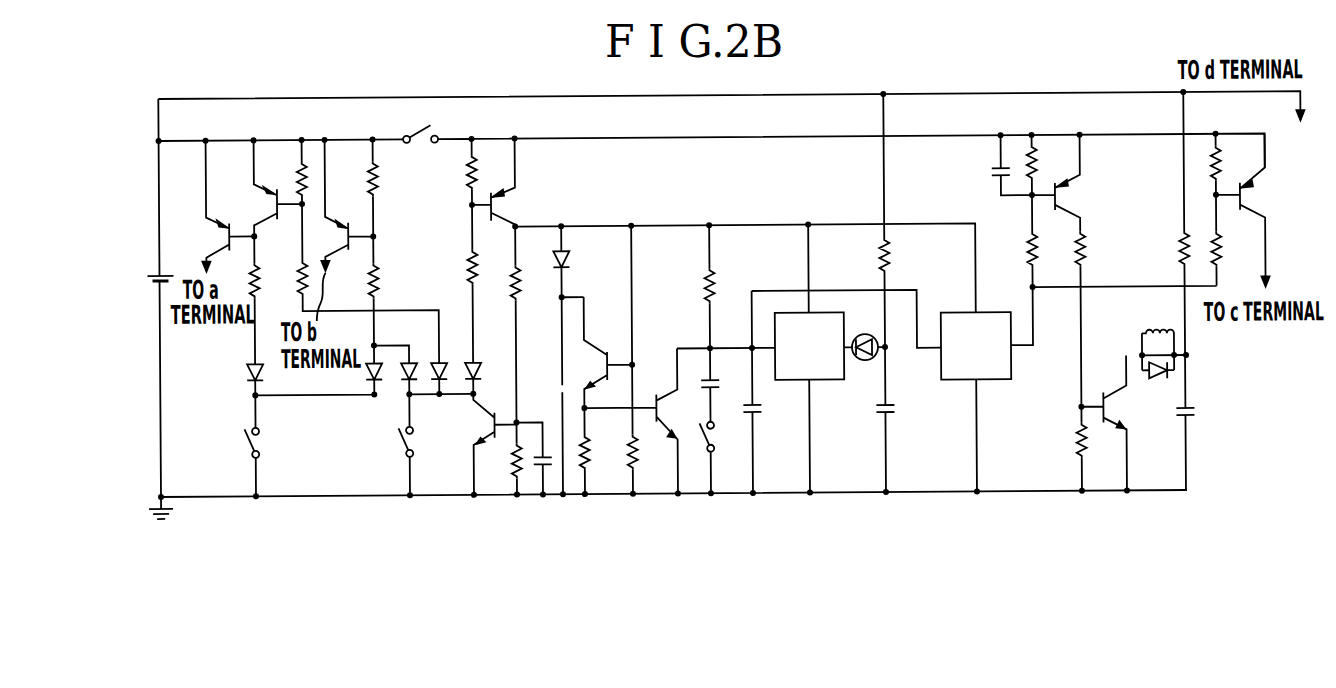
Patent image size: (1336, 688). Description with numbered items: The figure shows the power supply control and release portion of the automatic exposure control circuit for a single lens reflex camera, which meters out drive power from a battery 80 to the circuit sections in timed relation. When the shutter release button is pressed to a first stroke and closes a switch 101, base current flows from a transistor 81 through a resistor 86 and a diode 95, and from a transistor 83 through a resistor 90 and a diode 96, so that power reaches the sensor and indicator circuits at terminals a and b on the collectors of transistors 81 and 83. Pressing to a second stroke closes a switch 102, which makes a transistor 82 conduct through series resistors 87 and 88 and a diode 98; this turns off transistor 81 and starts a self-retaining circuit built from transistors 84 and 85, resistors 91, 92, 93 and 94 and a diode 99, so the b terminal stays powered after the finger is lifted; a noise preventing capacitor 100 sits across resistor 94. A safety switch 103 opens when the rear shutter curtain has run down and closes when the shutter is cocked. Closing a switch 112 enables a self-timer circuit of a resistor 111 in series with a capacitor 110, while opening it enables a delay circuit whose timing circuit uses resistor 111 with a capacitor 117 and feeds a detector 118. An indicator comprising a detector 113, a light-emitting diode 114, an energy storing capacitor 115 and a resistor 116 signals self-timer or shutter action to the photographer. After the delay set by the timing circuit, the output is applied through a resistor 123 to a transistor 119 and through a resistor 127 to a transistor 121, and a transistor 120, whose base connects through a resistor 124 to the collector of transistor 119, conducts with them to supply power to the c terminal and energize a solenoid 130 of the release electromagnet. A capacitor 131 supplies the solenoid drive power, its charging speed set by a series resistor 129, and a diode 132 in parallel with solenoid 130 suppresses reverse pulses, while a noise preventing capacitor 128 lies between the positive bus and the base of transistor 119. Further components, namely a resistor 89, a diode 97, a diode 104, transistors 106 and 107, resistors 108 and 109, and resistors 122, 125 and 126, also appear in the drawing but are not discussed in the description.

The battery 80 is at (152, 276).
The transistor 81 is at (230, 240).
The transistor 82 is at (264, 207).
The transistor 83 is at (349, 241).
The transistor 84 is at (497, 208).
The transistor 85 is at (484, 444).
The resistor 86 is at (266, 282).
The resistor 87 is at (291, 177).
The resistor 88 is at (290, 274).
The resistor 89 is at (385, 179).
The resistor 90 is at (385, 282).
The resistor 91 is at (459, 173).
The resistor 92 is at (459, 268).
The resistor 93 is at (502, 285).
The resistor 94 is at (505, 461).
The diode 95 is at (244, 373).
The diode 96 is at (379, 384).
The diode 97 is at (414, 363).
The diode 98 is at (444, 363).
The diode 99 is at (478, 373).
The noise preventing capacitor 100 is at (540, 472).
The switch 101 is at (239, 440).
The switch 102 is at (421, 445).
The safety switch 103 is at (422, 122).
The diode 104 is at (578, 258).
The transistor 106 is at (603, 356).
The transistor 107 is at (661, 410).
The resistor 108 is at (603, 452).
The resistor 109 is at (651, 452).
The capacitor 110 is at (724, 384).
The resistor 111 is at (698, 288).
The switch 112 is at (713, 440).
The detector 113 is at (809, 345).
The light-emitting diode 114 is at (866, 330).
The energy storing capacitor 115 is at (871, 408).
The resistor 116 is at (897, 256).
The capacitor 117 is at (765, 408).
The detector 118 is at (976, 345).
The transistor 119 is at (1060, 203).
The transistor 120 is at (1110, 413).
The transistor 121 is at (1245, 204).
The resistor 122 is at (1049, 162).
The resistor 123 is at (1016, 250).
The resistor 124 is at (1097, 249).
The resistor 125 is at (1065, 439).
The resistor 126 is at (1233, 165).
The resistor 127 is at (1232, 250).
The noise preventing capacitor 128 is at (983, 170).
The resistor 129 is at (1167, 249).
The solenoid 130 is at (1148, 337).
The capacitor 131 is at (1201, 410).
The diode 132 is at (1162, 383).